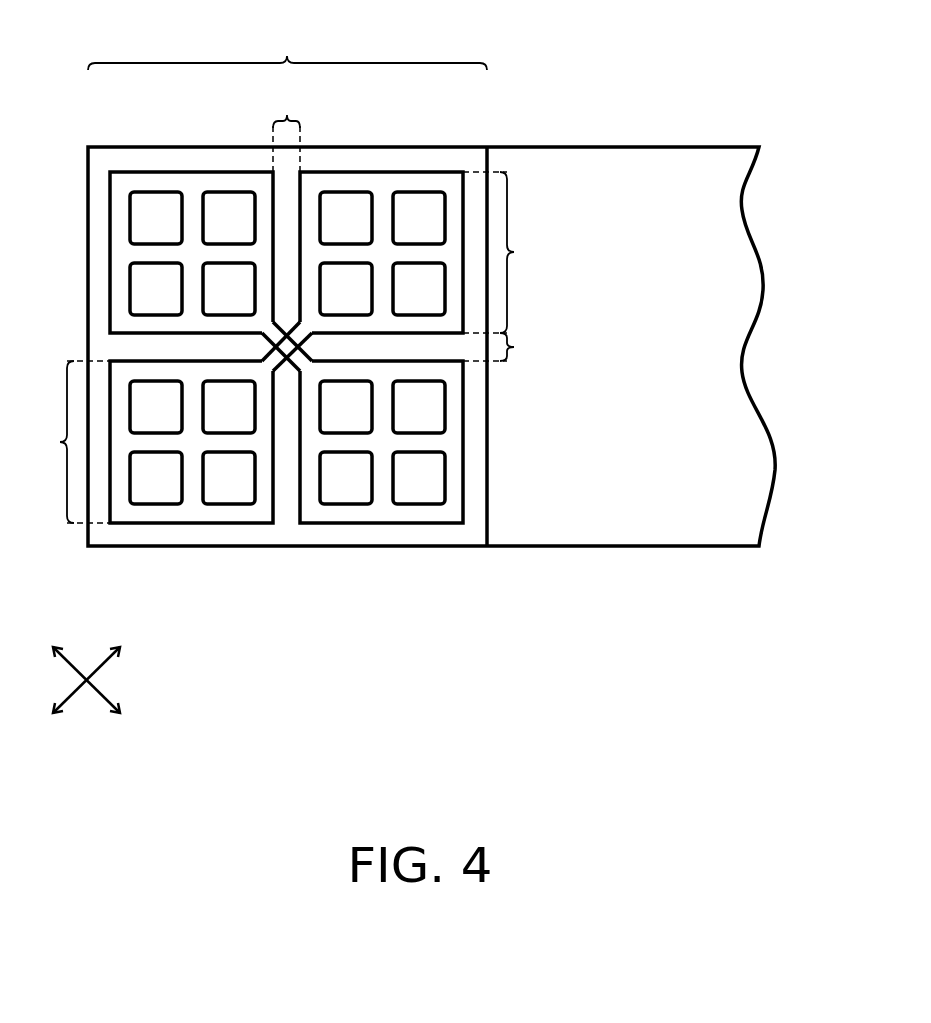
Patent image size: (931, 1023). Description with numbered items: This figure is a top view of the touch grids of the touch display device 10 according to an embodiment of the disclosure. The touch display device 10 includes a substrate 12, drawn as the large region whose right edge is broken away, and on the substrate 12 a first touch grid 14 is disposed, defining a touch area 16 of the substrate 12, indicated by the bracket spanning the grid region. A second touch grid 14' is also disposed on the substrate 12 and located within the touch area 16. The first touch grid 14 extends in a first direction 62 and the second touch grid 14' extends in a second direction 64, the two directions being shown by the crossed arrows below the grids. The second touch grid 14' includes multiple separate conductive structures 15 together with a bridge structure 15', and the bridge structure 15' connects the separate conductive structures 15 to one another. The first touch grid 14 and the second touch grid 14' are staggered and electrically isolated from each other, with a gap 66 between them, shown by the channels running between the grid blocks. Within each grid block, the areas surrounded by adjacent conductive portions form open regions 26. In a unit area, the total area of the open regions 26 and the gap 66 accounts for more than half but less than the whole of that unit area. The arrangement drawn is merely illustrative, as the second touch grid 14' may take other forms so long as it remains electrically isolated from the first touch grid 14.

The touch display device 10 is at (795, 71).
The substrate 12 is at (650, 547).
The first touch grid 14 is at (162, 217).
The second touch grid 14' is at (416, 215).
The separate conductive structures 15 is at (286, 347).
The bridge structure 15' is at (169, 346).
The touch area 16 is at (287, 47).
The open region 26 is at (245, 229).
The first direction 62 is at (102, 690).
The second direction 64 is at (97, 667).
The gap 66 is at (411, 223).